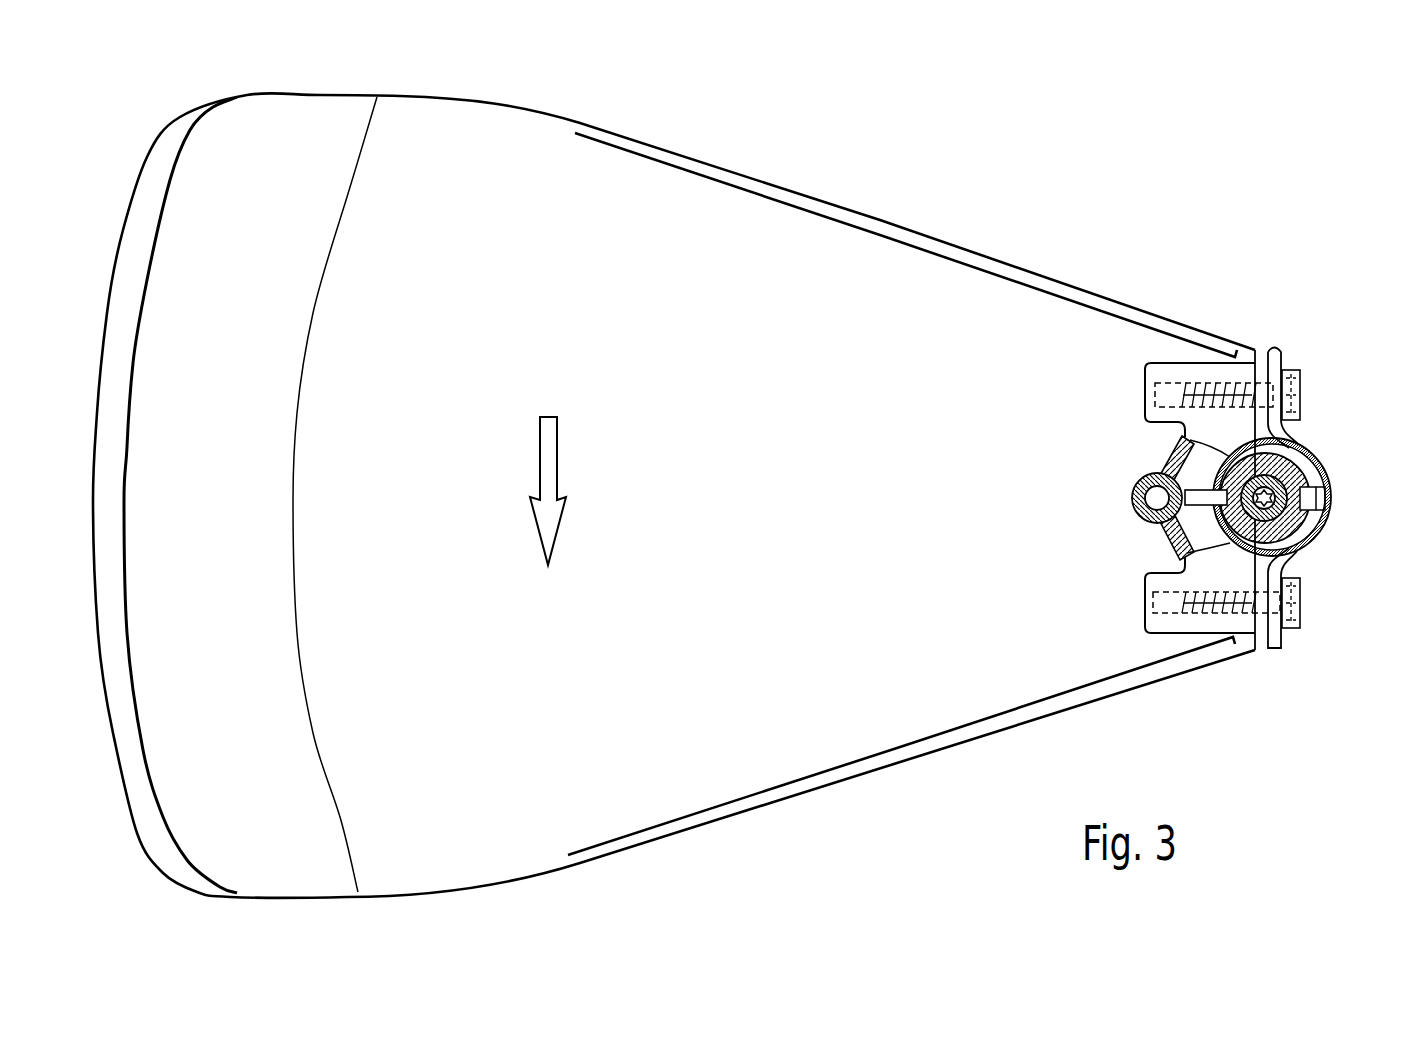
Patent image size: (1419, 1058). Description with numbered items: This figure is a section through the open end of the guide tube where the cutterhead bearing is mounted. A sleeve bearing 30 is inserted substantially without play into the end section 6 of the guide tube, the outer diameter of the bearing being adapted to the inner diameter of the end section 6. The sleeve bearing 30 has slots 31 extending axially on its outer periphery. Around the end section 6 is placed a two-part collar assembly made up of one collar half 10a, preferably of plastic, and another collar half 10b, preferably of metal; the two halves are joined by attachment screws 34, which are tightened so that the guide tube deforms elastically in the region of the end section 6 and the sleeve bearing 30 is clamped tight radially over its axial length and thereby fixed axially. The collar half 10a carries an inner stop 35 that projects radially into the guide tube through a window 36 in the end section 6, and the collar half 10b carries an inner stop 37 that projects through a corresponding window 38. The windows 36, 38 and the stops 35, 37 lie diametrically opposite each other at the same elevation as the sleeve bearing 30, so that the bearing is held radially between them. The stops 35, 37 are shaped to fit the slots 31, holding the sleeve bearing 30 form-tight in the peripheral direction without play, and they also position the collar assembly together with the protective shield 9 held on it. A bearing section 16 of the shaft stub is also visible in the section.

The protective shield 9 is at (827, 503).
The collar half 10a is at (1185, 370).
The collar half 10b is at (1270, 650).
The bearing section 16 is at (1297, 562).
The sleeve bearing 30 is at (1308, 549).
The slots 31 is at (1290, 452).
The end section 6 is at (1318, 450).
The attachment screws 34 is at (1290, 368).
The inner stop 35 is at (1170, 455).
The window 36 is at (1163, 520).
The inner stop 37 is at (1318, 493).
The window 38 is at (1333, 506).